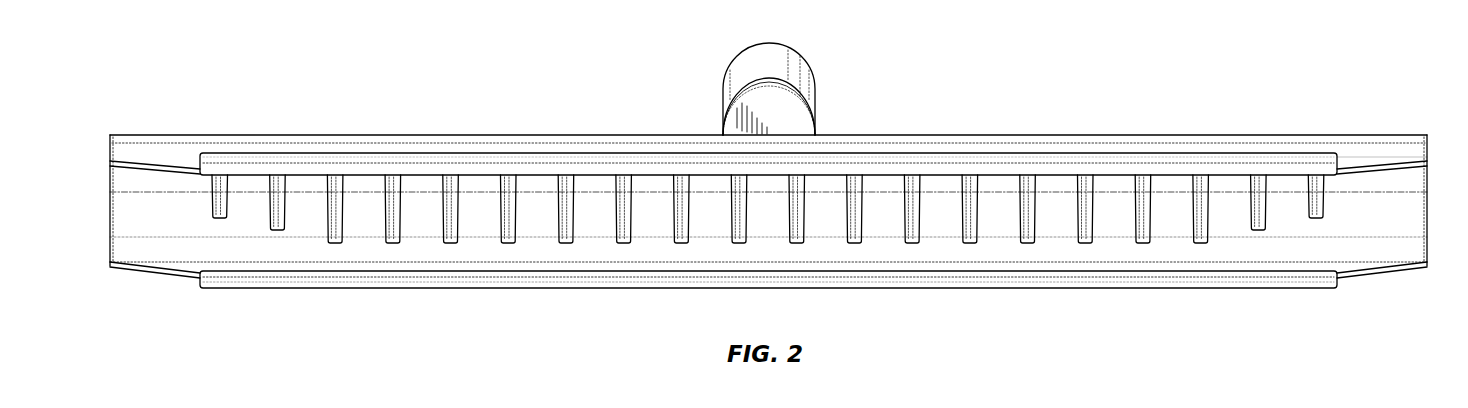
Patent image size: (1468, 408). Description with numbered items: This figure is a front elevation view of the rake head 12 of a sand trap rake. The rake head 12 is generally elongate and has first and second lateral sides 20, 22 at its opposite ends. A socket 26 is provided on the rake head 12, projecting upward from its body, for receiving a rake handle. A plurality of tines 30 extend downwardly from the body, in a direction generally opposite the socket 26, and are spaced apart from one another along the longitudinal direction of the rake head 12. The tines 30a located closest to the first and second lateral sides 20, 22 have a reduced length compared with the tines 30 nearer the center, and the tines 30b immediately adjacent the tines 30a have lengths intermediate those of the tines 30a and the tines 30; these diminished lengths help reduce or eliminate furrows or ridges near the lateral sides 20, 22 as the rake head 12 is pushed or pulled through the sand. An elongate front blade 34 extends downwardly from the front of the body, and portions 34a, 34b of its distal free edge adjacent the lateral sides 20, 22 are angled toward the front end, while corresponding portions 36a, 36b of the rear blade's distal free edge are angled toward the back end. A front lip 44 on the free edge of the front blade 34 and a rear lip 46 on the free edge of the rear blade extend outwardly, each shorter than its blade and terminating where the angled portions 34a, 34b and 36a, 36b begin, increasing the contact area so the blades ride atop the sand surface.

The rake head 12 is at (239, 80).
The first lateral side 20 is at (110, 178).
The second lateral side 22 is at (1430, 172).
The socket 26 is at (753, 53).
The tines 30 is at (448, 244).
The tines closest to the lateral sides 30a is at (229, 214).
The intermediate-length tines 30b is at (290, 221).
The front blade 34 is at (1379, 152).
The angled portion of front blade edge 34a is at (150, 173).
The angled portion of front blade edge 34b is at (1361, 175).
The angled portion of rear blade edge 36a is at (143, 274).
The angled portion of rear blade edge 36b is at (1352, 280).
The front lip 44 is at (874, 160).
The rear lip 46 is at (247, 289).